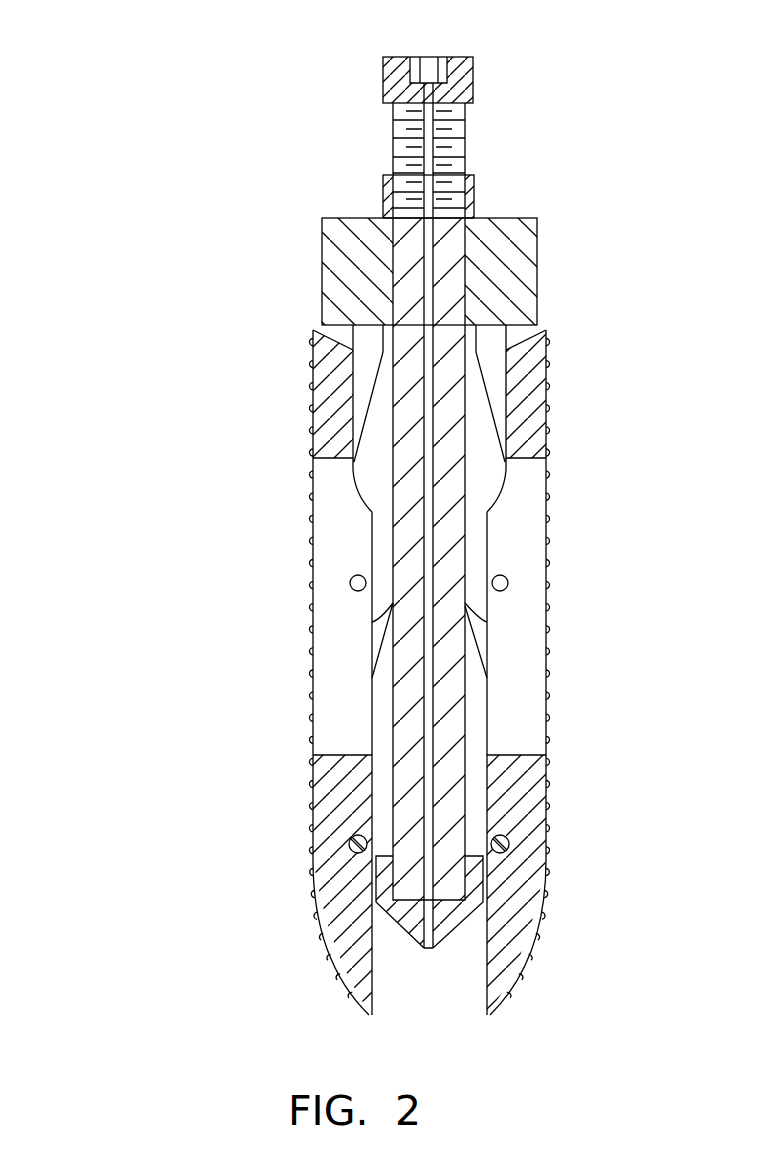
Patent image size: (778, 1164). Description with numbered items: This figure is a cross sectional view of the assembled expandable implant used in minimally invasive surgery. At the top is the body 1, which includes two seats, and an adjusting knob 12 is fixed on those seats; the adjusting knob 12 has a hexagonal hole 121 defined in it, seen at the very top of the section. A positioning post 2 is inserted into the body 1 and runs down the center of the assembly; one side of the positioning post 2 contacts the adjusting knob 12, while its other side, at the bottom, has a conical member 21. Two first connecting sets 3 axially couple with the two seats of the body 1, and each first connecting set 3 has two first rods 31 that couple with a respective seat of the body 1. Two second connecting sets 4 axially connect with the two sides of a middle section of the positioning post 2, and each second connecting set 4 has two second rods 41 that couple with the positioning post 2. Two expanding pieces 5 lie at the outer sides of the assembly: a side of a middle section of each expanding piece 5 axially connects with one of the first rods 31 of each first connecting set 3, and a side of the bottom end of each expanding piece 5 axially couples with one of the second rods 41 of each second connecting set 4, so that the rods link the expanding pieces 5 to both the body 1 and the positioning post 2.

The body 1 is at (513, 263).
The adjusting knob 12 is at (467, 73).
The hexagonal hole 121 is at (430, 72).
The positioning post 2 is at (443, 630).
The conical member 21 is at (447, 917).
The first connecting set 3 is at (482, 452).
The first rod 31 is at (375, 472).
The second connecting set 4 is at (478, 720).
The second rod 41 is at (387, 738).
The expanding piece 5 is at (533, 852).